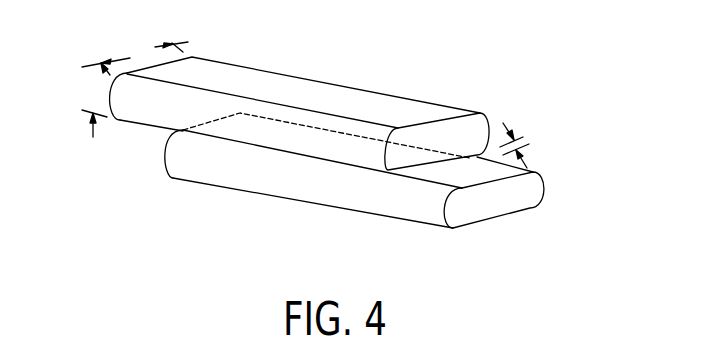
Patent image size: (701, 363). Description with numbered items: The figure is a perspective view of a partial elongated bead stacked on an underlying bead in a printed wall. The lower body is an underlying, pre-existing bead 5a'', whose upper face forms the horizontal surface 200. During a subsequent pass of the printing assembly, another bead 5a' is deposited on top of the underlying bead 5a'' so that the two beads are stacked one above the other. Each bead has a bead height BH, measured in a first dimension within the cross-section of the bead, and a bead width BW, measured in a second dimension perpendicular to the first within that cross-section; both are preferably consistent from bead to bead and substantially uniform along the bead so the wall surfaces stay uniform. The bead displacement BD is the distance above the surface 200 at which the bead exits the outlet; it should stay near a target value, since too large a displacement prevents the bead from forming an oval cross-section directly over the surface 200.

The bead 5a' is at (309, 108).
The underlying, pre-existing bead 5a'' is at (388, 185).
The horizontal surface 200 is at (458, 171).
The bead width BW is at (135, 40).
The bead height BH is at (87, 100).
The bead displacement BD is at (529, 145).